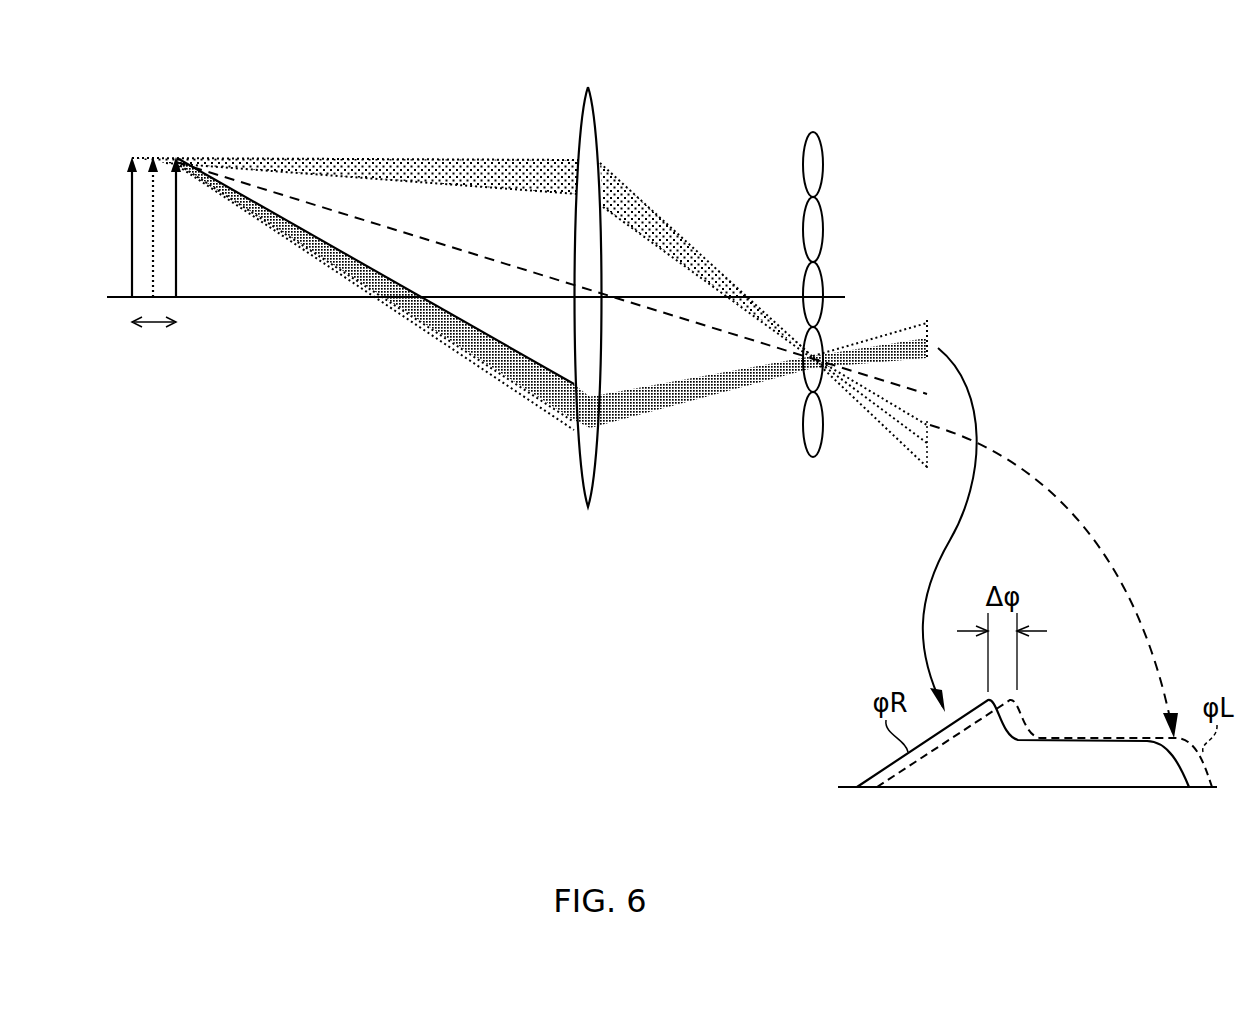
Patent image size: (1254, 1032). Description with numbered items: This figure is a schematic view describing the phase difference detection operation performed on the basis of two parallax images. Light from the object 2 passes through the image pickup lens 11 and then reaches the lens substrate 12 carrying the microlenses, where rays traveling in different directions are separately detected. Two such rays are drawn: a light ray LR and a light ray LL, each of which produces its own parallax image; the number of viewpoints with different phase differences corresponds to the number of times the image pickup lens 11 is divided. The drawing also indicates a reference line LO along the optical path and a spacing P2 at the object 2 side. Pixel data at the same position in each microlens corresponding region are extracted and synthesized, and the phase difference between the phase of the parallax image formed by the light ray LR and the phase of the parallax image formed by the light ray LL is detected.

The object 2 is at (181, 150).
The image pickup lens 11 is at (588, 87).
The lens substrate 12 is at (813, 132).
The light ray LL is at (432, 158).
The light ray LR is at (423, 330).
The optical axis LO is at (238, 297).
The pitch of light sources P2 is at (154, 342).